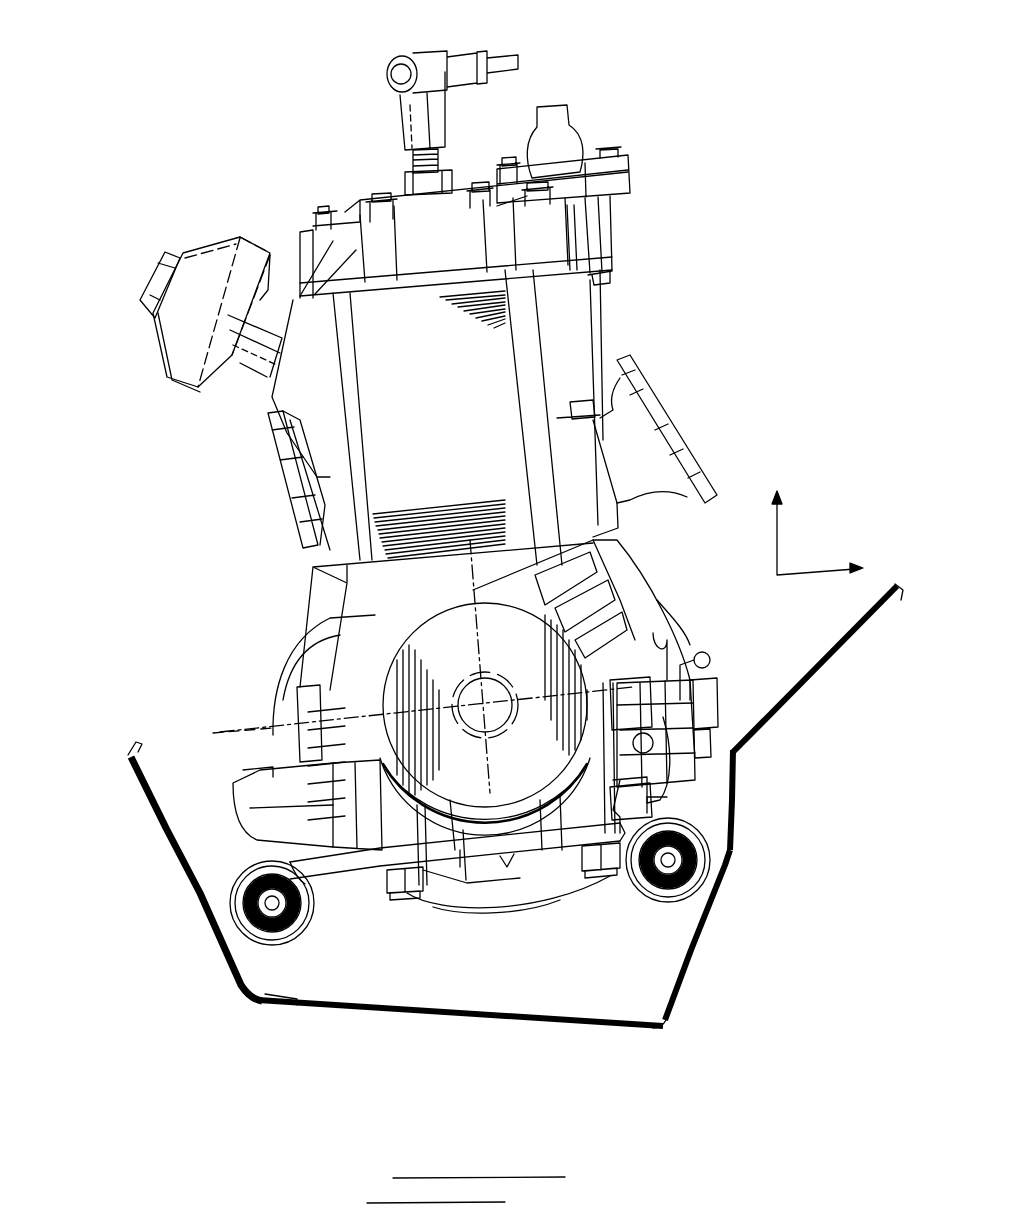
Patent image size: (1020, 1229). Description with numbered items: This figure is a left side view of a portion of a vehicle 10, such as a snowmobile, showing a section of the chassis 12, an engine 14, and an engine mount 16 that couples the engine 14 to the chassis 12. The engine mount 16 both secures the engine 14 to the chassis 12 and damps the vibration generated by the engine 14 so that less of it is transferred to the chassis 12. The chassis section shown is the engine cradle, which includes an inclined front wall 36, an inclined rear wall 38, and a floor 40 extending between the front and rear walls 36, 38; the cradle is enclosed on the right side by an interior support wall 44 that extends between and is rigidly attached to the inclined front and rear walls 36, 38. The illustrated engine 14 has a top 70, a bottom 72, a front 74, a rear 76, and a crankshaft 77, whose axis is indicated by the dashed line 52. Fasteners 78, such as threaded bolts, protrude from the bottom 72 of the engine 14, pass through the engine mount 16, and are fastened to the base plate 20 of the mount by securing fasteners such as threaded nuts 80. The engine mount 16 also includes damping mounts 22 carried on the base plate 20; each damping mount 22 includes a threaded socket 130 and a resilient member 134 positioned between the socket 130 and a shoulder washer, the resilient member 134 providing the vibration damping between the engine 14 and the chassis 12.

The vehicle 10 is at (152, 104).
The chassis 12 is at (693, 955).
The engine 14 is at (647, 287).
The engine mount 16 is at (712, 790).
The base plate 20 is at (347, 866).
The damping mounts 22 is at (257, 937).
The inclined front wall 36 is at (123, 757).
The inclined rear wall 38 is at (843, 653).
The floor 40 is at (497, 1010).
The interior support wall 44 is at (677, 954).
The crankshaft axis 52 is at (235, 730).
The top 70 is at (472, 197).
The bottom 72 is at (387, 800).
The front 74 is at (163, 333).
The rear 76 is at (677, 423).
The crankshaft 77 is at (460, 688).
The fasteners 78 is at (607, 880).
The threaded nuts 80 is at (397, 882).
The threaded socket 130 is at (243, 905).
The resilient member 134 is at (253, 877).